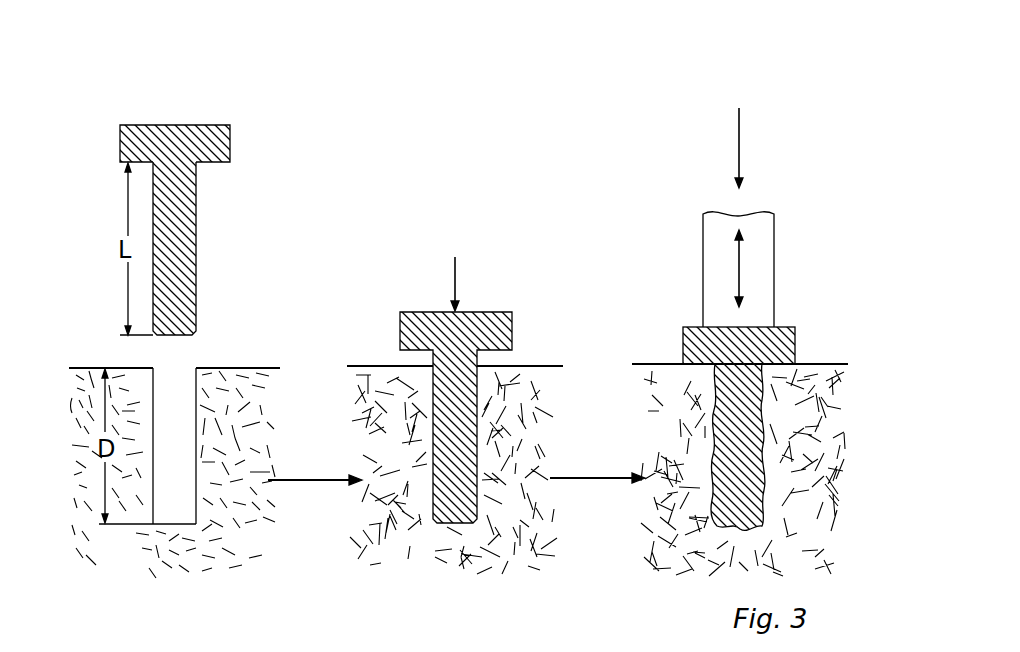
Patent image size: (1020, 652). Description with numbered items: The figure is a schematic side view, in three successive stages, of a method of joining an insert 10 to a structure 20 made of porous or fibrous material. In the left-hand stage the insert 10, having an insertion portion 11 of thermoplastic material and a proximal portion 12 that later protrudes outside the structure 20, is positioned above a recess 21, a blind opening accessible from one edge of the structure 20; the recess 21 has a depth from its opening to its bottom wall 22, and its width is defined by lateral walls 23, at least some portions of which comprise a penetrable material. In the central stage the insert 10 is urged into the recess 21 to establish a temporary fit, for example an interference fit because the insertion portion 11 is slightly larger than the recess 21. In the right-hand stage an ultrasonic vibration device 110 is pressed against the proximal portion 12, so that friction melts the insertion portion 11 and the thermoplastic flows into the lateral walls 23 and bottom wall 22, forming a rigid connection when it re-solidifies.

The insert 10 is at (458, 286).
The insertion portion 11 is at (183, 228).
The proximal portion 12 is at (150, 147).
The structure 20 is at (270, 388).
The recess 21 is at (180, 459).
The bottom wall 22 is at (176, 522).
The lateral walls 23 is at (197, 407).
The ultrasonic vibration device 110 is at (723, 252).